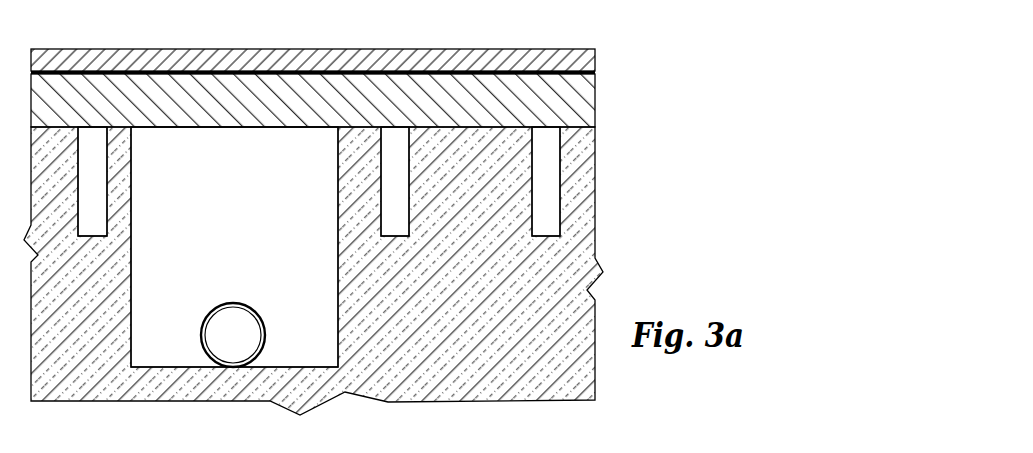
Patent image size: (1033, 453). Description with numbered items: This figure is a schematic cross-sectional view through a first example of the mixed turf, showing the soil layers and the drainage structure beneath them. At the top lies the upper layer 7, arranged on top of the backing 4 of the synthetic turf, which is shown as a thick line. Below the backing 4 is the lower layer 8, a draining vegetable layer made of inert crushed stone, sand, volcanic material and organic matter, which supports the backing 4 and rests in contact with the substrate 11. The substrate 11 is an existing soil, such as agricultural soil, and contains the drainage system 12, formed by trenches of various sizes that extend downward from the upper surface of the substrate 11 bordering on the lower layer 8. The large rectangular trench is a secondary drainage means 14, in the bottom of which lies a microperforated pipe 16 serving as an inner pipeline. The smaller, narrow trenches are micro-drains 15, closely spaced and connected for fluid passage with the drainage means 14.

The backing 4 is at (583, 73).
The upper layer 7 is at (585, 59).
The lower layer 8 is at (273, 112).
The substrate 11 is at (437, 390).
The drainage system 12 is at (724, 154).
The secondary drainage means 14 is at (225, 240).
The micro-drains 15 is at (81, 202).
The microperforated pipes 16 is at (222, 342).